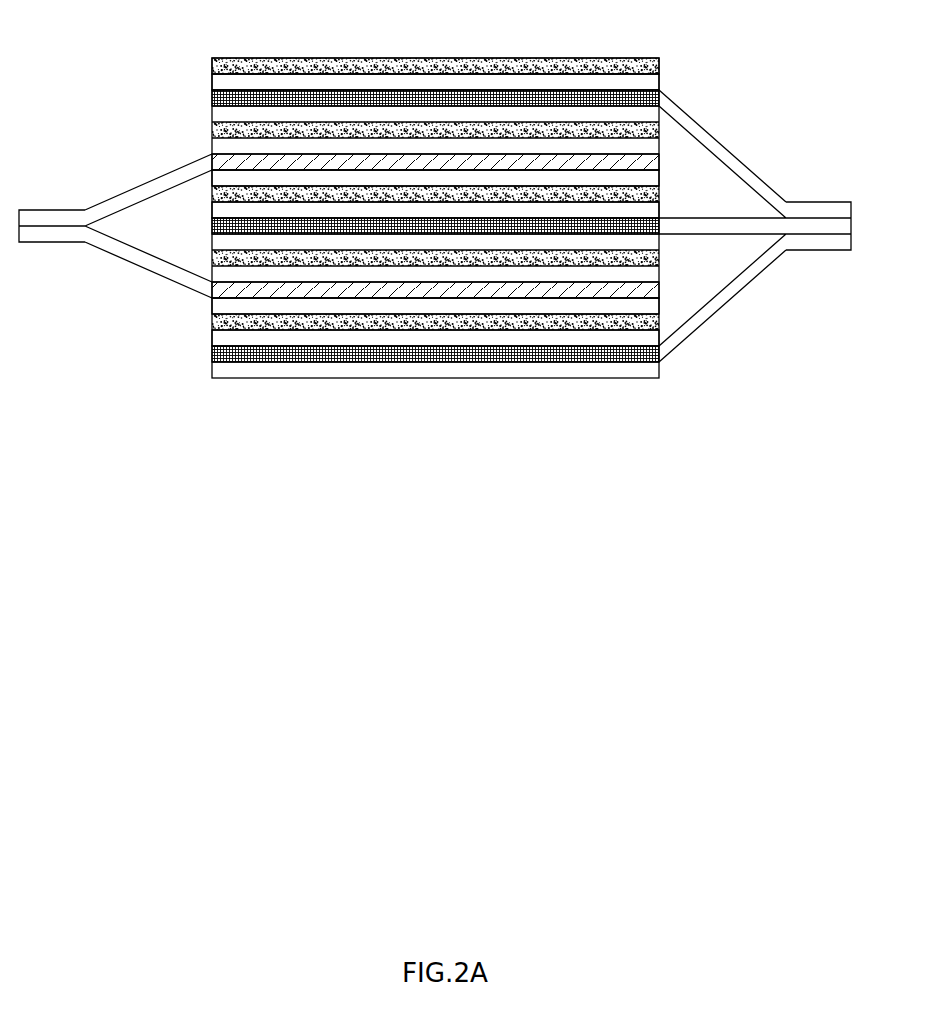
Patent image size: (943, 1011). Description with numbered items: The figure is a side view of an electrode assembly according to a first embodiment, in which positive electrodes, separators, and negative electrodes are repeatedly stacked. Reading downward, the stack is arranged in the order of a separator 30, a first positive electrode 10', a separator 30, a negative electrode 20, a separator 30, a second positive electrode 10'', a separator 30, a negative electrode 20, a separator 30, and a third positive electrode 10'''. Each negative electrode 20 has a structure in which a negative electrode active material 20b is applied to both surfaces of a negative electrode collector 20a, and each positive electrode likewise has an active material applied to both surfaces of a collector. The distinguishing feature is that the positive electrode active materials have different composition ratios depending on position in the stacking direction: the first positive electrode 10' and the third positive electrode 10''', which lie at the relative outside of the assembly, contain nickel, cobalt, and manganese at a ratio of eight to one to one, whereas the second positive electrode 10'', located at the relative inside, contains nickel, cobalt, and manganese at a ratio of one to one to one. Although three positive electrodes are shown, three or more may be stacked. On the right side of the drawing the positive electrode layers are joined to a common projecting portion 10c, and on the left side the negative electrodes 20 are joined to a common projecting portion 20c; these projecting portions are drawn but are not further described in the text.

The separator 30 is at (230, 64).
The first positive electrode 10' is at (378, 90).
The second positive electrode 10'' is at (343, 253).
The third positive electrode 10''' is at (374, 345).
The positive electrode tab 10c is at (818, 202).
The negative electrode 20 is at (511, 202).
The negative electrode collector 20a is at (659, 162).
The negative electrode active material 20b is at (659, 178).
The negative electrode tab 20c is at (48, 210).